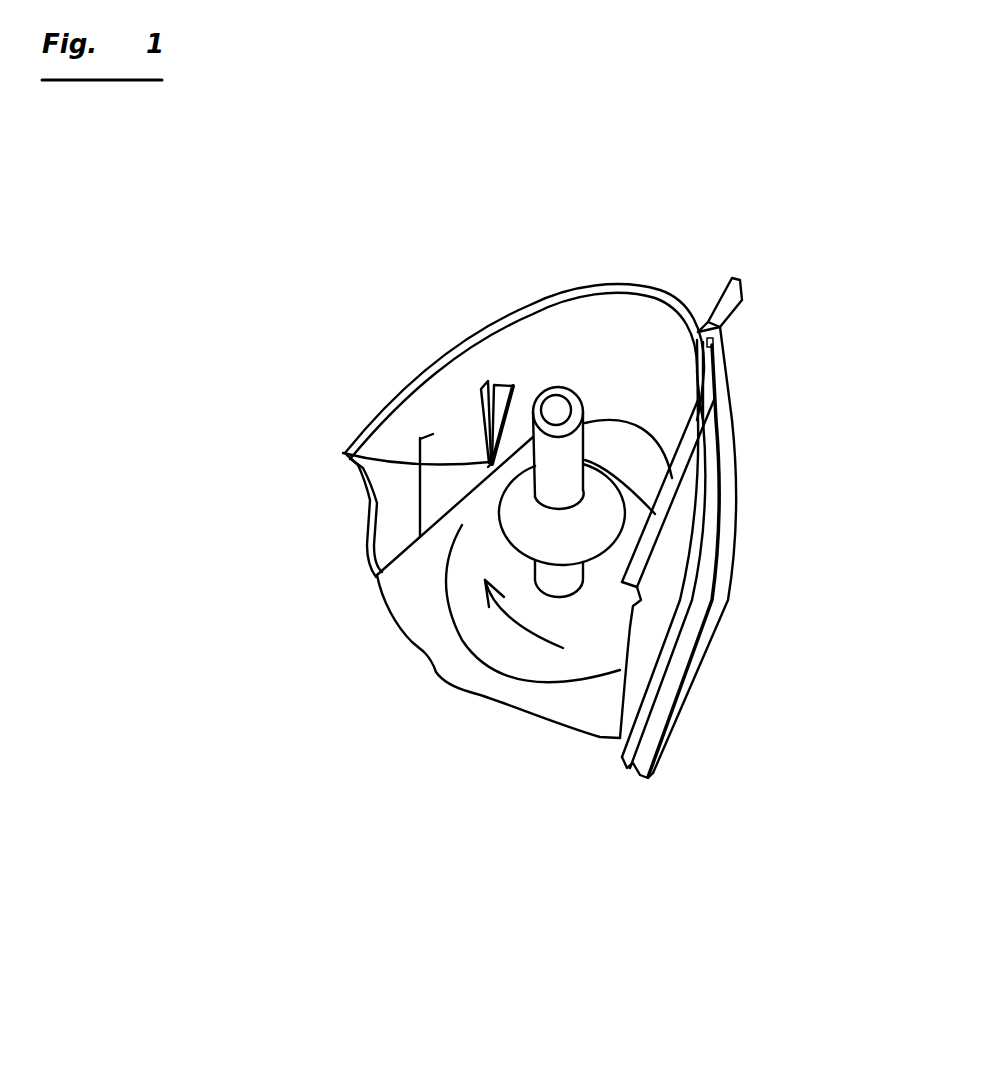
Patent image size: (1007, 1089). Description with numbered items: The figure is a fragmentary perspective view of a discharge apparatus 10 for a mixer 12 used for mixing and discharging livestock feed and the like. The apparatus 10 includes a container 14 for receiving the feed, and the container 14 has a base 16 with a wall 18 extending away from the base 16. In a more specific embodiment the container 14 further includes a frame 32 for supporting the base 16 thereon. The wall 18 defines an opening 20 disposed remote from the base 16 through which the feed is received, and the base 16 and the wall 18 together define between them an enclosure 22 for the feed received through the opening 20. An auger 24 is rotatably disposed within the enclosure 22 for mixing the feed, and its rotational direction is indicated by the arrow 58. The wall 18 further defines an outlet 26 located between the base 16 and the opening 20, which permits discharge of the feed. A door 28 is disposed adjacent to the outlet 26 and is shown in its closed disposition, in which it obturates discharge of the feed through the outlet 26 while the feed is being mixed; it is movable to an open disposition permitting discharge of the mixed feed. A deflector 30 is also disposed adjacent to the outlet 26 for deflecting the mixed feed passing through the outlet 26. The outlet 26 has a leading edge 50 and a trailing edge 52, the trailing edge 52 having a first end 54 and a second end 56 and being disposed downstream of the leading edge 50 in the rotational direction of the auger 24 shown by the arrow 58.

The discharge apparatus 10 is at (665, 272).
The mixer 12 is at (683, 697).
The container 14 is at (686, 533).
The base 16 is at (427, 623).
The wall 18 is at (653, 640).
The opening 20 is at (698, 357).
The enclosure 22 is at (614, 386).
The auger 24 is at (520, 501).
The outlet 26 is at (420, 453).
The door 28 is at (430, 436).
The deflector 30 is at (508, 379).
The frame 32 is at (655, 748).
The leading edge 50 is at (368, 519).
The trailing edge 52 is at (489, 462).
The first end 54 is at (347, 452).
The second end 56 is at (485, 462).
The arrow 58 is at (515, 630).